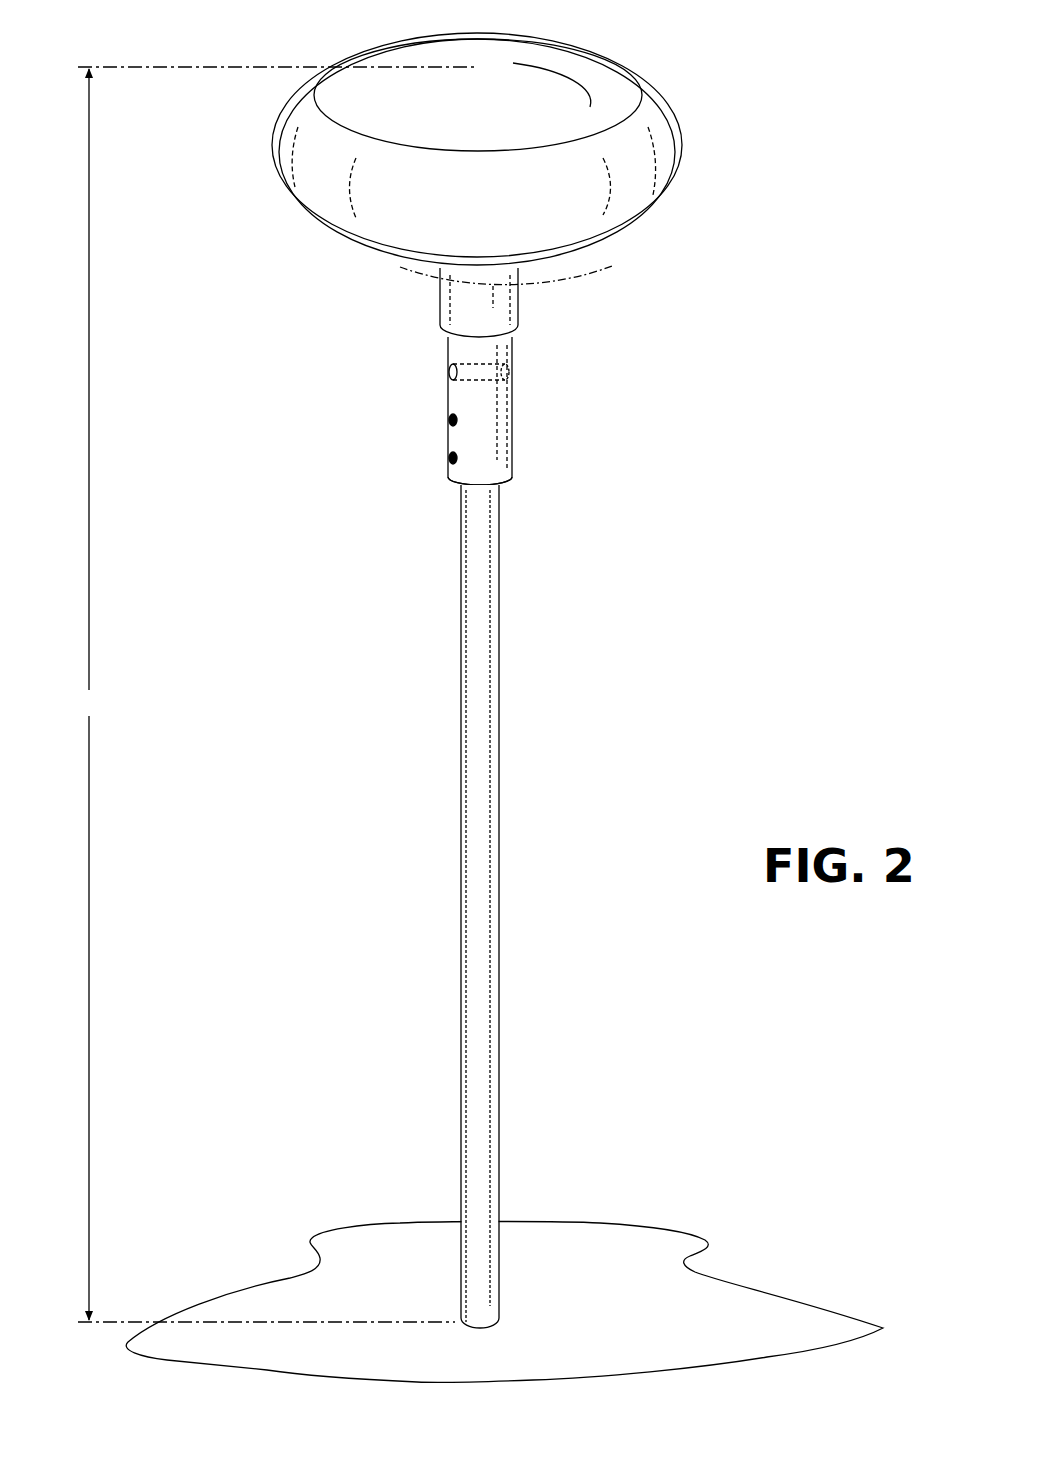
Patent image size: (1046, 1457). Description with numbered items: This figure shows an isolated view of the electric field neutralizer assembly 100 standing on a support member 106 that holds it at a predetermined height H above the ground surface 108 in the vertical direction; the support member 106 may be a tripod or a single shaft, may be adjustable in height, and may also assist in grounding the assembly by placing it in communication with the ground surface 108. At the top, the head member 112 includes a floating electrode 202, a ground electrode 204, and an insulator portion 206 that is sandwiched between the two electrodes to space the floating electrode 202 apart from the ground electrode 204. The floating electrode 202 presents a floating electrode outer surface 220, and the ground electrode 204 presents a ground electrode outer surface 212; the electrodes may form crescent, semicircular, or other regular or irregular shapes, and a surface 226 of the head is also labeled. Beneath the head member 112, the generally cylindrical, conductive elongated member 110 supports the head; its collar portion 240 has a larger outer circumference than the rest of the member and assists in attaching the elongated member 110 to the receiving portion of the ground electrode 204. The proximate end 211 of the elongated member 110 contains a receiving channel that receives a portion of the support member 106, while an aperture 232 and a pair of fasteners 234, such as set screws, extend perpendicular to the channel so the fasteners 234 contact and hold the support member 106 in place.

The electric field neutralizer assembly 100 is at (125, 45).
The predetermined height H is at (278, 694).
The head member 112 is at (685, 70).
The floating electrode 202 is at (351, 58).
The floating electrode outer surface 220 is at (545, 62).
The side wall 226 is at (667, 147).
The insulator portion 206 is at (313, 193).
The ground electrode outer surface 212 is at (608, 247).
The ground electrode 204 is at (403, 255).
The collar portion 240 is at (500, 320).
The elongated member 110 is at (599, 343).
The aperture 232 is at (448, 370).
The pair of fasteners 234 is at (448, 420).
The proximate end 211 is at (512, 478).
The support member 106 is at (403, 630).
The ground surface 108 is at (641, 1341).